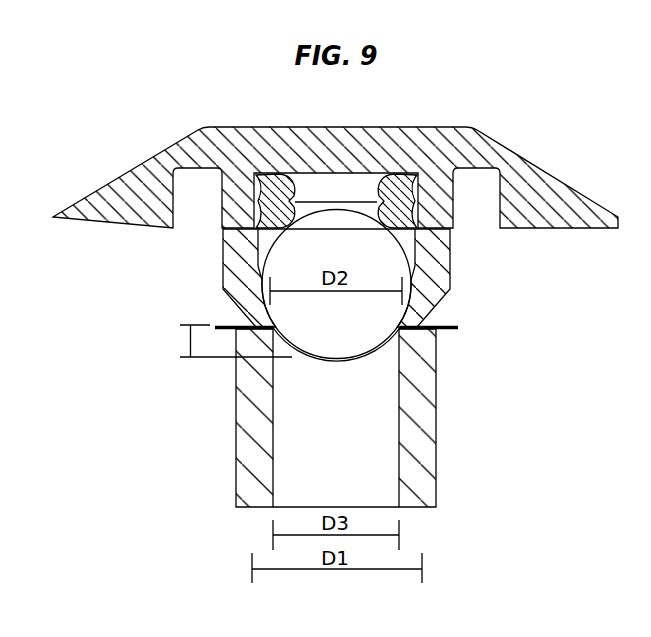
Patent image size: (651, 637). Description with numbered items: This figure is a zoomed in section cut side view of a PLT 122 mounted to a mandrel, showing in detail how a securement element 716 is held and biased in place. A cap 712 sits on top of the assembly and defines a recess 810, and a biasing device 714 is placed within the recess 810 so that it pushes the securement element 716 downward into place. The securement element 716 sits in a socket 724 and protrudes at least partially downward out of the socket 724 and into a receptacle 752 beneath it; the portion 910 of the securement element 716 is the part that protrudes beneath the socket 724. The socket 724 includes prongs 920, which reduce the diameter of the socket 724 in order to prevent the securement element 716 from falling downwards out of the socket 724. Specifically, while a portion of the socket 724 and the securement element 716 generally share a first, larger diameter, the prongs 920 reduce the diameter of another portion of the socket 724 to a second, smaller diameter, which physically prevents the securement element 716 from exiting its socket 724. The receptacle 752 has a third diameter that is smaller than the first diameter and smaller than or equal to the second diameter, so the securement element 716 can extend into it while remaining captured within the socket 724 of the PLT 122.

The cap 712 is at (523, 156).
The biasing device 714 is at (267, 186).
The recess 810 is at (339, 189).
The PLT 122 is at (223, 262).
The socket 724 is at (393, 263).
The securement element 716 is at (410, 255).
The portion of securement element 910 is at (190, 328).
The prongs 920 is at (431, 320).
The receptacle 752 is at (364, 438).